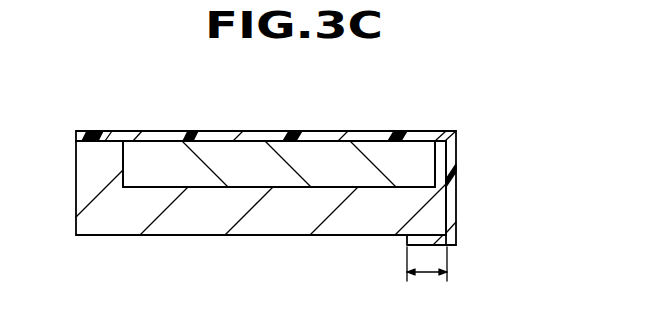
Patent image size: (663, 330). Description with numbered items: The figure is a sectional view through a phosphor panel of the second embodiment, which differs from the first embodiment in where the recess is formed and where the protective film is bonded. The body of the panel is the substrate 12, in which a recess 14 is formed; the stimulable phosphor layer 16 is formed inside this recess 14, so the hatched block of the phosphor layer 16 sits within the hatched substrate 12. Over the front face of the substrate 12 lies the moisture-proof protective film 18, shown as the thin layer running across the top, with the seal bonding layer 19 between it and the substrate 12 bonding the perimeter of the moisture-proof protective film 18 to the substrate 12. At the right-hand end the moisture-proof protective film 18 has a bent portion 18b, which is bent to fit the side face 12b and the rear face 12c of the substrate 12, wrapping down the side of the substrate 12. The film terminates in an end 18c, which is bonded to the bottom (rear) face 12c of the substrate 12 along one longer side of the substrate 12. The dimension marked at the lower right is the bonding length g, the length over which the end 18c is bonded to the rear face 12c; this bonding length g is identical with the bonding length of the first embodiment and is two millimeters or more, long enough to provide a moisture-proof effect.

The substrate 12 is at (203, 220).
The side face 12b is at (452, 161).
The rear face 12c is at (280, 235).
The recess 14 is at (123, 172).
The stimulable phosphor layer 16 is at (308, 155).
The moisture-proof protective film 18 is at (163, 139).
The bent portion 18b is at (453, 203).
The end 18c is at (404, 240).
The seal bonding layer 19 is at (102, 138).
The bonding length g is at (427, 275).